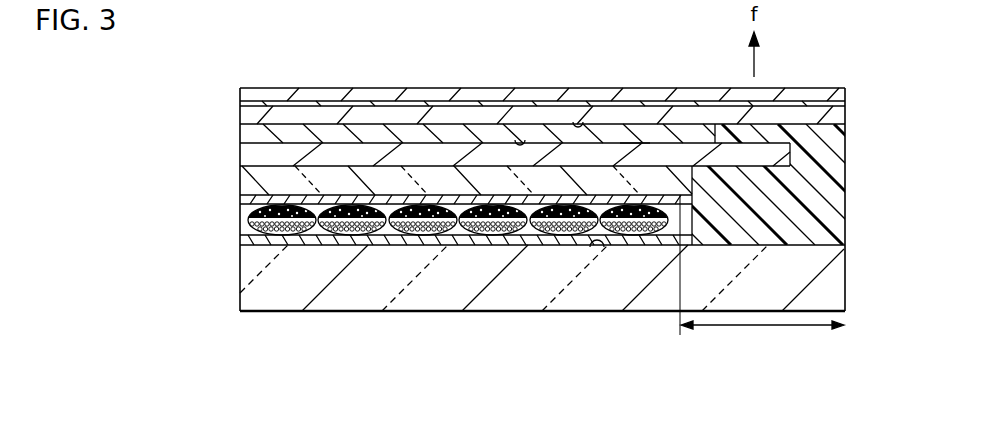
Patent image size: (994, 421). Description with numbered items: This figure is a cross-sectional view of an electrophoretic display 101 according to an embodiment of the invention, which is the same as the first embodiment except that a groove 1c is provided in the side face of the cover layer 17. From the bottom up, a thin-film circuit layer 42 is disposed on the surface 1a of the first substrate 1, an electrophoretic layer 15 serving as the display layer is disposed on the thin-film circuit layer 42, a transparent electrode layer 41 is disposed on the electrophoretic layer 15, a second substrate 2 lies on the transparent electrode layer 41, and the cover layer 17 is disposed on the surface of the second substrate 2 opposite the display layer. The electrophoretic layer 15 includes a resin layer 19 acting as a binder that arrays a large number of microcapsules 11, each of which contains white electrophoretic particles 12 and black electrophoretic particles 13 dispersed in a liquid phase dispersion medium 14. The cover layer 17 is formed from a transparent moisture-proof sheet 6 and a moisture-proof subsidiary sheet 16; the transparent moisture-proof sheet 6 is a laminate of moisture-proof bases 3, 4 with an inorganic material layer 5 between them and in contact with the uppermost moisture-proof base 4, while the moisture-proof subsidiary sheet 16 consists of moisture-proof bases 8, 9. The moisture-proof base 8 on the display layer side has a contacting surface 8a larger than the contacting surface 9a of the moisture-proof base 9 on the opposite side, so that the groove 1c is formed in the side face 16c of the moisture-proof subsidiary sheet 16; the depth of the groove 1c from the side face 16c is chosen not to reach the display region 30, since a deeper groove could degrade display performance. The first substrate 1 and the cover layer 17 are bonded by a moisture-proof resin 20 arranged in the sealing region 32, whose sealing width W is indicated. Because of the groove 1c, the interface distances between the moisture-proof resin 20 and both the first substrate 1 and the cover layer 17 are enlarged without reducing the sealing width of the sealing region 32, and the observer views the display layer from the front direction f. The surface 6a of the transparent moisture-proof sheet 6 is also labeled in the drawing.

The electrophoretic display 101 is at (831, 69).
The cover layer 17 is at (124, 162).
The transparent moisture-proof sheet 6 is at (168, 44).
The moisture-proof base 4 is at (241, 92).
The inorganic material layer 5 is at (241, 106).
The moisture-proof base 3 is at (242, 116).
The moisture-proof subsidiary sheet 16 is at (168, 115).
The moisture-proof base 9 is at (243, 133).
The moisture-proof base 8 is at (245, 153).
The contacting surface 9a is at (525, 140).
The surface of layer group 6 6a is at (583, 122).
The contacting surface 8a is at (634, 142).
The second substrate 2 is at (241, 180).
The first substrate 1 is at (467, 208).
The surface 1a is at (590, 247).
The groove 1c is at (747, 133).
The electrophoretic layer 15 is at (129, 305).
The resin layer 19 is at (243, 205).
The black electrophoretic particles 13 is at (246, 217).
The microcapsules 11 is at (247, 230).
The white electrophoretic particles 12 is at (243, 243).
The liquid phase dispersion medium 14 is at (245, 275).
The transparent electrode layer 41 is at (340, 206).
The thin-film circuit layer 42 is at (377, 240).
The side face 16c is at (795, 155).
The moisture-proof resin 20 is at (768, 181).
The display region 30 is at (680, 348).
The sealing region 32 is at (845, 348).